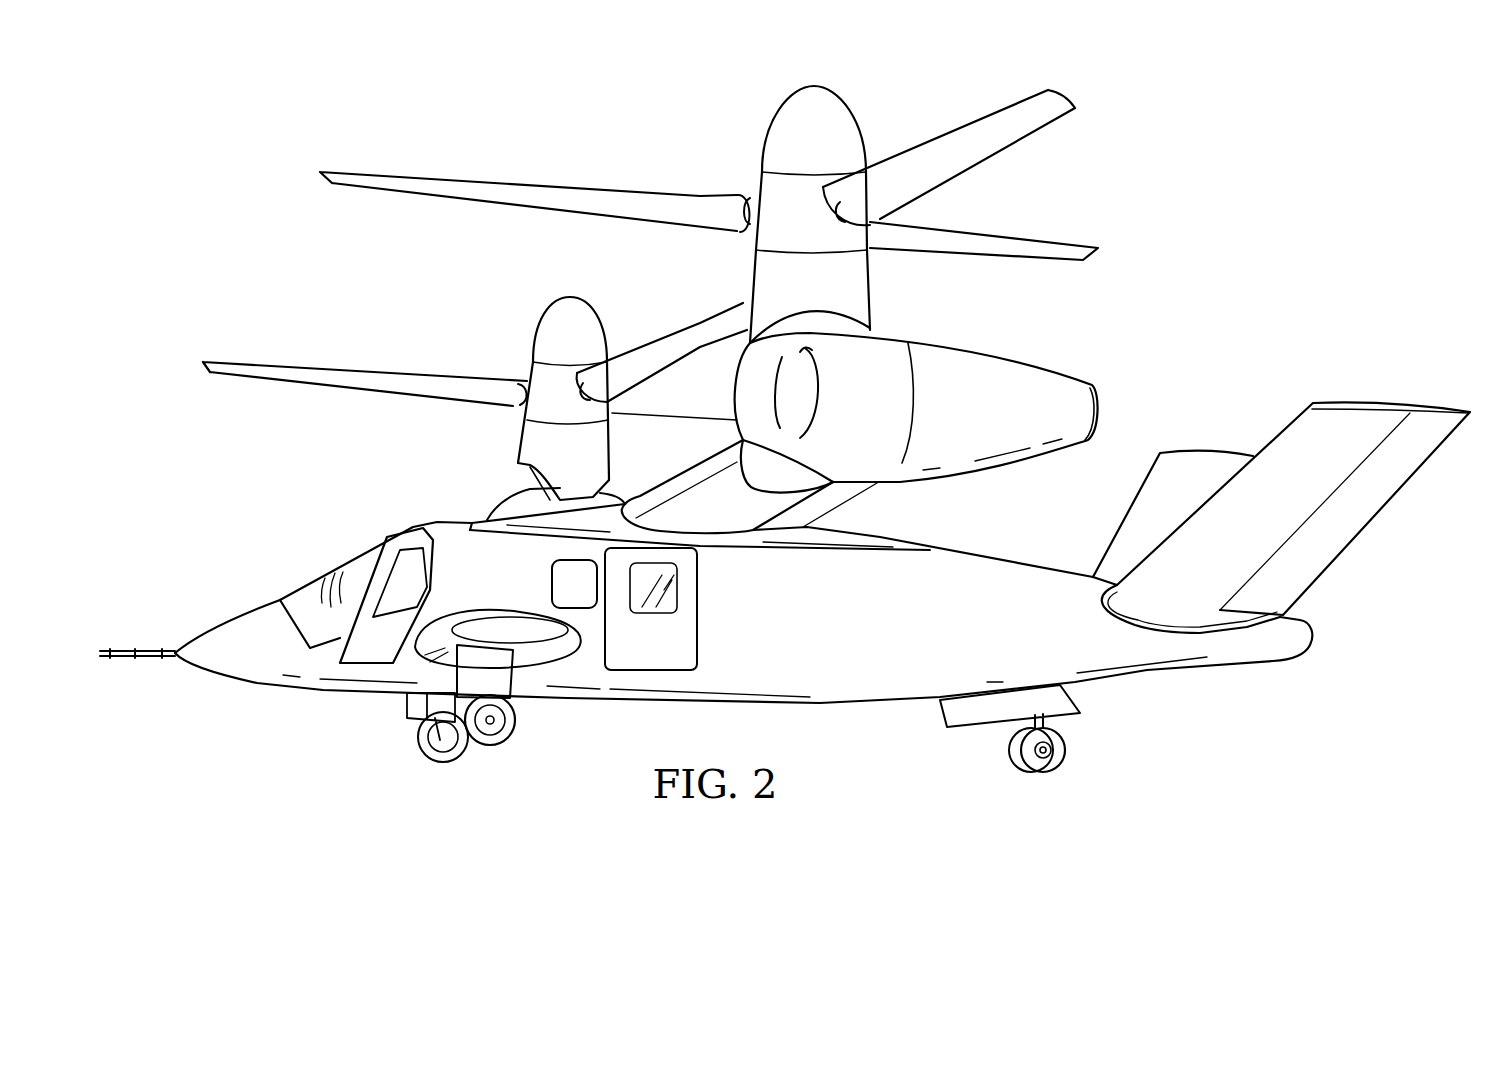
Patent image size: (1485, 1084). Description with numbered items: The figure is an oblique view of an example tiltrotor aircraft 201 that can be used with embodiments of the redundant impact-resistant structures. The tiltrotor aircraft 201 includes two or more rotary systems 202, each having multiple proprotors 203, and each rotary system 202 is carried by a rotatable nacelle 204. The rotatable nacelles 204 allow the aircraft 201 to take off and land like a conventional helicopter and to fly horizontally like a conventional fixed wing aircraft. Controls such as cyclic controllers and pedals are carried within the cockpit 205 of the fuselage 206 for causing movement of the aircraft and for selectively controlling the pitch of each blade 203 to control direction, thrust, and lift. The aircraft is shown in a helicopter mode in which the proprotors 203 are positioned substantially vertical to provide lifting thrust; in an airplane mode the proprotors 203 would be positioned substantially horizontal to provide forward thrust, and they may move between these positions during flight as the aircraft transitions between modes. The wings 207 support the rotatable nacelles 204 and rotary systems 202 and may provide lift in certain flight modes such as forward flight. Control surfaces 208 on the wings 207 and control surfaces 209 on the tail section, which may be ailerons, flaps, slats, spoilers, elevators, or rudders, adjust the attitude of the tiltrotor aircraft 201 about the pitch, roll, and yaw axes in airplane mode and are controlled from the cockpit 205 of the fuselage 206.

The tiltrotor aircraft 201 is at (1222, 171).
The rotary system 202 is at (753, 138).
The proprotor 203 is at (517, 184).
The rotatable nacelle 204 is at (726, 291).
The cockpit 205 is at (311, 585).
The fuselage 206 is at (853, 701).
The wing 207 is at (707, 493).
The control surface 208 is at (827, 505).
The control surface 209 is at (1200, 451).